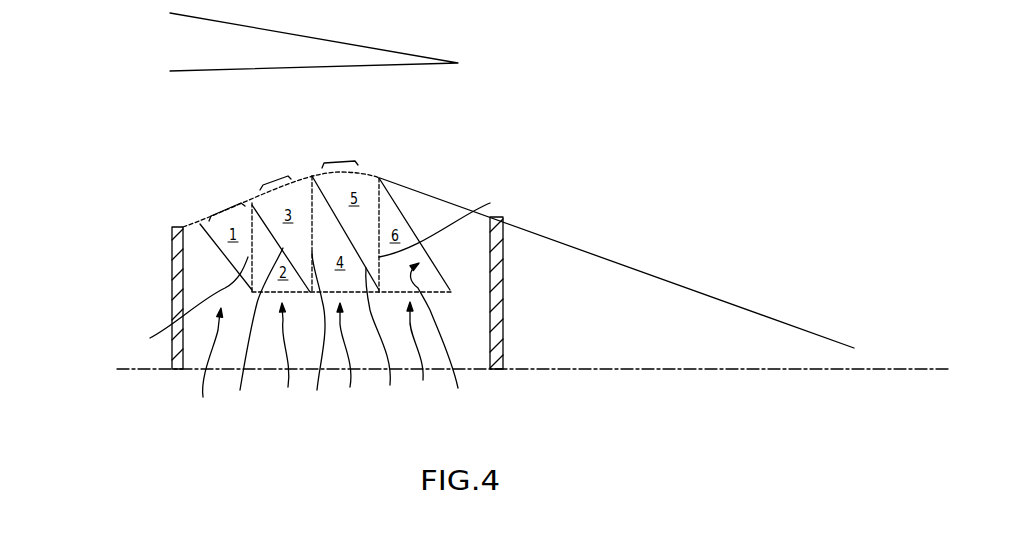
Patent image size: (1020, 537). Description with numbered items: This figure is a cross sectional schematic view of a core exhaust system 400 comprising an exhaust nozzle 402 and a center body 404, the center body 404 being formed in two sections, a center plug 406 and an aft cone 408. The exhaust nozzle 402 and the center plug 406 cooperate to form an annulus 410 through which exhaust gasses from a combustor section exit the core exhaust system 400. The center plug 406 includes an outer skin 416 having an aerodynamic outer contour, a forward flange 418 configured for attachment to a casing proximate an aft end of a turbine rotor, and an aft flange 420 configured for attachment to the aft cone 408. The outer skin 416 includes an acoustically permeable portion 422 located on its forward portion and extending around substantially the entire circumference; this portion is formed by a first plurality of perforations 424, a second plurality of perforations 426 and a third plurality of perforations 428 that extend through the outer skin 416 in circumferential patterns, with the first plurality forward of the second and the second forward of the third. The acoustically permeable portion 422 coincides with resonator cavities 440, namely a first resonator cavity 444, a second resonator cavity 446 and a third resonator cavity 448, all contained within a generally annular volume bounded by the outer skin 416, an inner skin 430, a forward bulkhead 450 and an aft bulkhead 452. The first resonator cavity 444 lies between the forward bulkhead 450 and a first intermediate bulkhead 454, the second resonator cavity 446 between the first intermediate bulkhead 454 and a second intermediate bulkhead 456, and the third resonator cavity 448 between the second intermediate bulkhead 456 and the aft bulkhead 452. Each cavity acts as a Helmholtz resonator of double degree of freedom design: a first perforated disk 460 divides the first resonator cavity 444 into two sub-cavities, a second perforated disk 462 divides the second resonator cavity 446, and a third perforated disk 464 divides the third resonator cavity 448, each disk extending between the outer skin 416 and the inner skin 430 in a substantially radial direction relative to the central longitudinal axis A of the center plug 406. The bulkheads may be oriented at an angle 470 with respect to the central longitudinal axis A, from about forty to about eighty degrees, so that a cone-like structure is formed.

The core exhaust system 400 is at (90, 66).
The exhaust nozzle 402 is at (340, 40).
The center body 404 is at (598, 178).
The center plug 406 is at (197, 223).
The aft cone 408 is at (713, 295).
The annulus 410 is at (440, 101).
The outer skin 416 is at (396, 180).
The forward flange 418 is at (172, 287).
The aft flange 420 is at (503, 283).
The acoustically permeable portion 422 is at (235, 160).
The first plurality of perforations 424 is at (223, 207).
The second plurality of perforations 426 is at (272, 180).
The third plurality of perforations 428 is at (343, 162).
The inner skin 430 is at (449, 339).
The resonator cavities 440 is at (201, 363).
The first resonator cavity 444 is at (277, 359).
The second resonator cavity 446 is at (348, 359).
The third resonator cavity 448 is at (420, 357).
The forward bulkhead 450 is at (217, 248).
The aft bulkhead 452 is at (410, 227).
The first intermediate bulkhead 454 is at (254, 333).
The second intermediate bulkhead 456 is at (382, 340).
The first perforated disk 460 is at (181, 305).
The second perforated disk 462 is at (316, 336).
The third perforated disk 464 is at (453, 223).
The angle 470 is at (420, 287).
The central longitudinal axis A is at (913, 370).